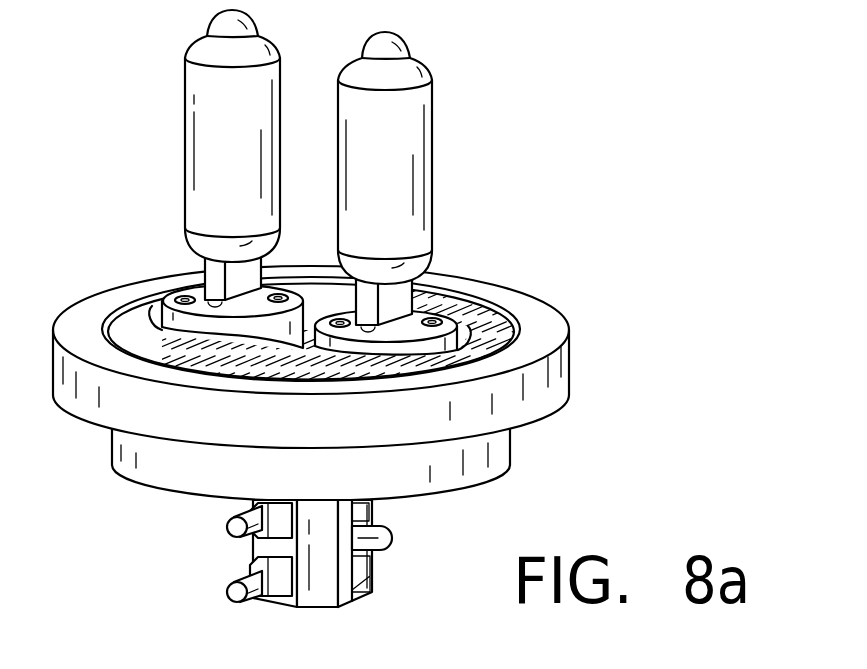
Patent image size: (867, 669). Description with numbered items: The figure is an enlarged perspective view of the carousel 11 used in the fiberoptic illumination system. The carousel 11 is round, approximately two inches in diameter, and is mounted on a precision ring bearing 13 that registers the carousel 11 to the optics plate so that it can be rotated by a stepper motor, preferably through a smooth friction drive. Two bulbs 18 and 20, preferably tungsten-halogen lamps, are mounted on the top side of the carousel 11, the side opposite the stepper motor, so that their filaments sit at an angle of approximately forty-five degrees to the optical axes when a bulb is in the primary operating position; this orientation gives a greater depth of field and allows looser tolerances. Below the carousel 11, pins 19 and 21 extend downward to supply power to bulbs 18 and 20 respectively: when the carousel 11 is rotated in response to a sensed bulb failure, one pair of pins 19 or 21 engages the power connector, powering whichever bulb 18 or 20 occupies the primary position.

The carousel 11 is at (545, 204).
The precision ring bearing 13 is at (572, 341).
The bulb 18 is at (193, 42).
The pins 19 is at (227, 524).
The bulb 20 is at (387, 32).
The pins 21 is at (391, 536).